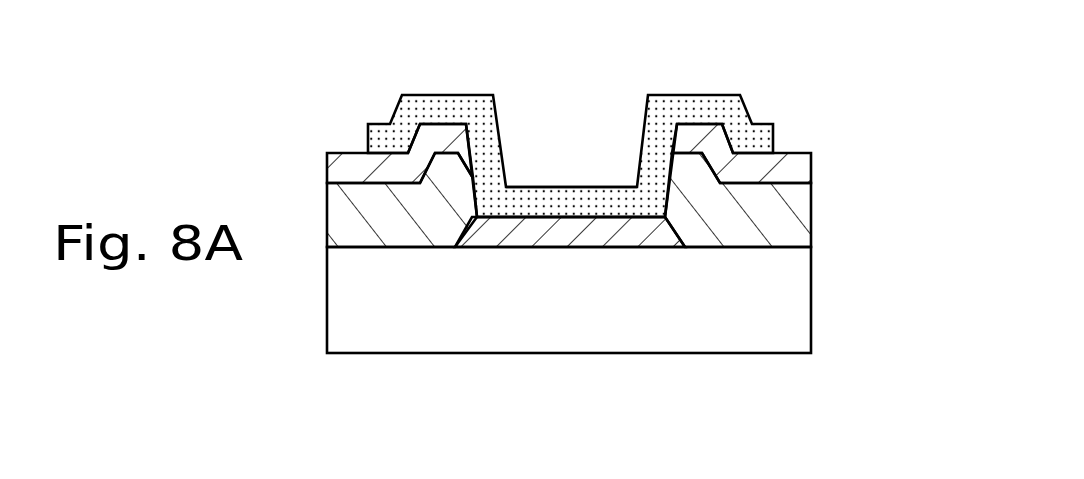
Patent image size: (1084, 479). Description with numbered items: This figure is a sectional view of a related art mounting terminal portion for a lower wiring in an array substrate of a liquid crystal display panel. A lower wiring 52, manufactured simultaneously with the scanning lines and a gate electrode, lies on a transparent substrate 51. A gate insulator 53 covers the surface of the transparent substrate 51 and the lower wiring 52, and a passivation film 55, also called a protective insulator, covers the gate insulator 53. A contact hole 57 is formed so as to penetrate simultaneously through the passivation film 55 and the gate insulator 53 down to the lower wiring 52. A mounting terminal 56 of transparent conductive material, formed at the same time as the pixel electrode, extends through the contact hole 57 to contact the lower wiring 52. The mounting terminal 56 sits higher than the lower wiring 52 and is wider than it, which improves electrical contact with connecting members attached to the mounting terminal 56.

The transparent substrate 51 is at (772, 330).
The lower wiring 52 is at (512, 232).
The gate insulator 53 is at (700, 227).
The passivation film 55 is at (345, 165).
The mounting terminal 56 is at (720, 108).
The contact hole 57 is at (558, 208).